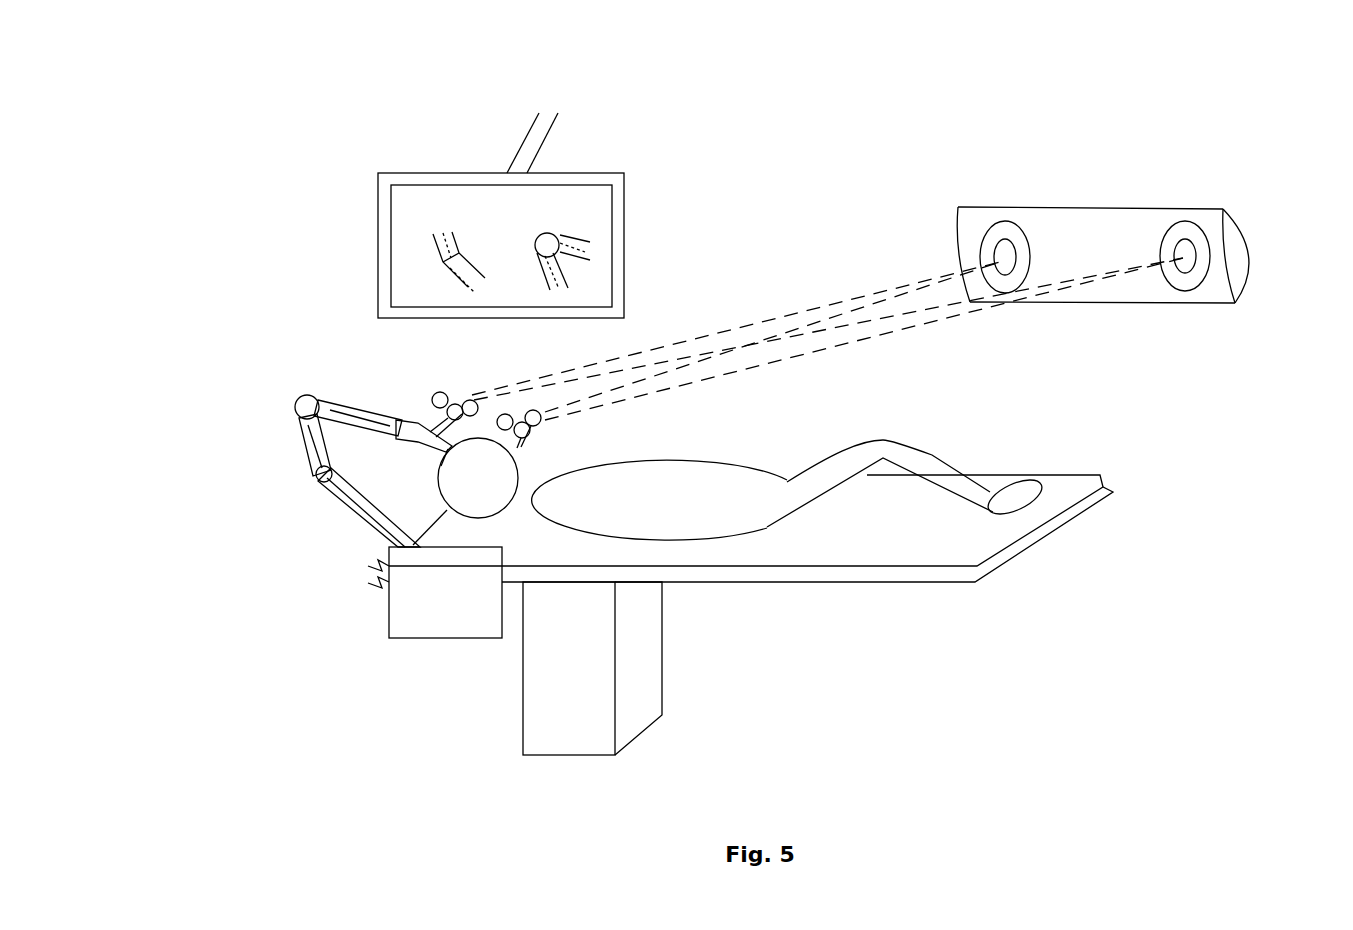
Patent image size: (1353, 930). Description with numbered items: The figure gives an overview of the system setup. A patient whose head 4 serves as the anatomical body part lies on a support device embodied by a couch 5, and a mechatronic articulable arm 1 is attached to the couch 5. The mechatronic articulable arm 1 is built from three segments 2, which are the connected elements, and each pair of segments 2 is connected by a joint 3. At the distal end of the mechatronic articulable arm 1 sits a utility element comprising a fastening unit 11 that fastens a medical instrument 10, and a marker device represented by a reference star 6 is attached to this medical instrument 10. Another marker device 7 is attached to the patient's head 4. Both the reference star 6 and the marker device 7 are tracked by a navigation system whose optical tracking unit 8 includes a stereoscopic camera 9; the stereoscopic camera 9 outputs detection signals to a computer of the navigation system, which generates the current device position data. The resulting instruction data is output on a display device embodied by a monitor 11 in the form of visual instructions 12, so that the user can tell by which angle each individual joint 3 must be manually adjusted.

The mechatronic articulable arm 1 is at (238, 473).
The segment 2 is at (370, 408).
The joint 3 is at (303, 402).
The head 4 is at (470, 483).
The couch 5 is at (688, 583).
The reference star 6 is at (457, 412).
The marker device 7 is at (543, 421).
The optical tracking unit 8 is at (1103, 188).
The stereoscopic camera 9 is at (1000, 238).
The medical instrument 10 is at (440, 443).
The fastening unit 11 is at (470, 175).
The visual instructions 12 is at (435, 248).